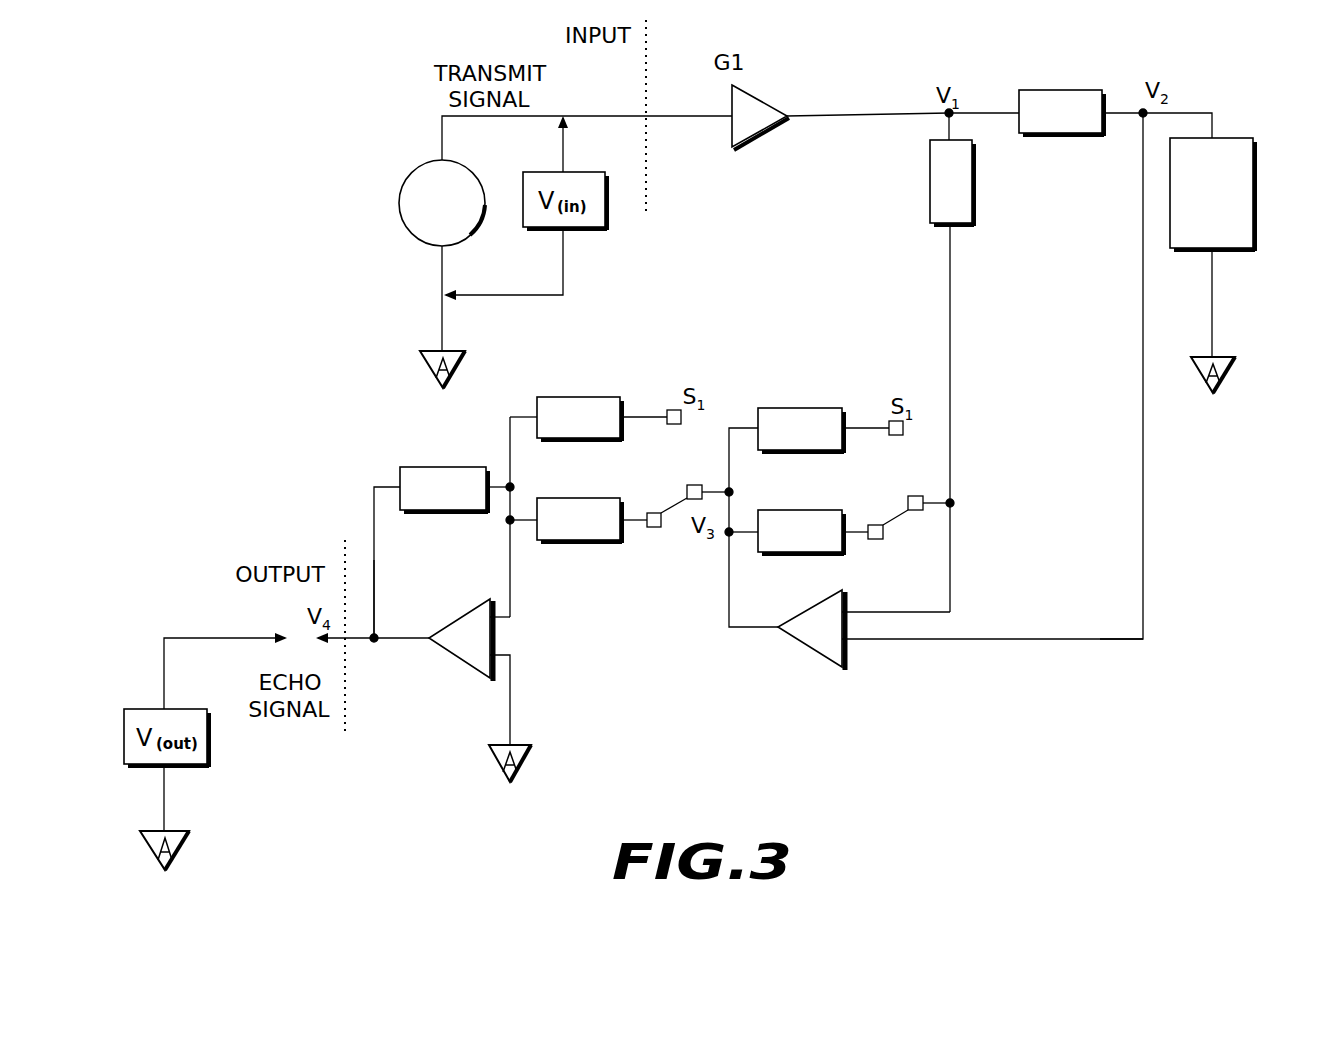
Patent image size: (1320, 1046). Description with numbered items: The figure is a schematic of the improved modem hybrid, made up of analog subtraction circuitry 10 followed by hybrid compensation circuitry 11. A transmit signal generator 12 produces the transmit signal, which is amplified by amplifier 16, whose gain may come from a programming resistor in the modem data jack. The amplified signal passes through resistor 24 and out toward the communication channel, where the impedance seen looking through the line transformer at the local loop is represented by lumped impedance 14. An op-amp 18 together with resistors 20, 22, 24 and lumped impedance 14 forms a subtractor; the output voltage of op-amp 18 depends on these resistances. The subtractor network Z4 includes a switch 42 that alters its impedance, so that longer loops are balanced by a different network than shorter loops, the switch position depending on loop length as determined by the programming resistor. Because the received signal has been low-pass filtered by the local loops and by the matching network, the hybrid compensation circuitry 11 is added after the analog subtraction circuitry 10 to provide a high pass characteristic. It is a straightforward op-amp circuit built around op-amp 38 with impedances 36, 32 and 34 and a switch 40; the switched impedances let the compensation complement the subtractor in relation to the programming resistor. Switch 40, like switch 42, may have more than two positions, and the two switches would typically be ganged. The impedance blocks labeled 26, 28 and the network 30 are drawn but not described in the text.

The analog subtraction circuitry 10 is at (760, 718).
The hybrid compensation circuitry 11 is at (423, 732).
The transmit signal generator 12 is at (398, 201).
The lumped impedance 14 is at (1232, 138).
The amplifier 16 is at (740, 86).
The op-amp 18 is at (795, 645).
The resistor 20 is at (837, 447).
The resistor 22 is at (928, 142).
The resistor 24 is at (1020, 90).
The impedance Z4-L 26 is at (762, 408).
The impedance Z4-S 28 is at (762, 510).
The switchable impedance network Z5 30 is at (617, 447).
The impedance 32 is at (540, 397).
The impedance 34 is at (540, 498).
The impedance 36 is at (405, 467).
The op-amp 38 is at (453, 655).
The switch 40 is at (662, 498).
The switch 42 is at (888, 510).